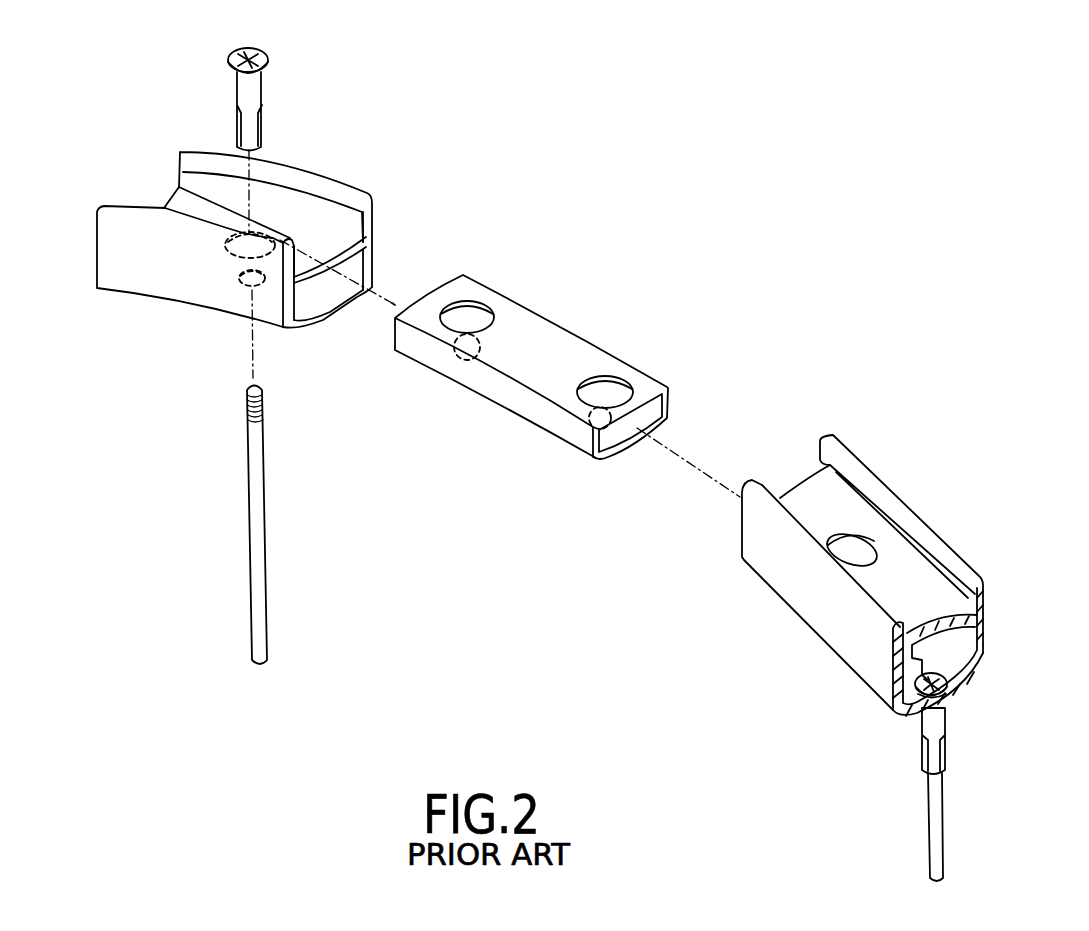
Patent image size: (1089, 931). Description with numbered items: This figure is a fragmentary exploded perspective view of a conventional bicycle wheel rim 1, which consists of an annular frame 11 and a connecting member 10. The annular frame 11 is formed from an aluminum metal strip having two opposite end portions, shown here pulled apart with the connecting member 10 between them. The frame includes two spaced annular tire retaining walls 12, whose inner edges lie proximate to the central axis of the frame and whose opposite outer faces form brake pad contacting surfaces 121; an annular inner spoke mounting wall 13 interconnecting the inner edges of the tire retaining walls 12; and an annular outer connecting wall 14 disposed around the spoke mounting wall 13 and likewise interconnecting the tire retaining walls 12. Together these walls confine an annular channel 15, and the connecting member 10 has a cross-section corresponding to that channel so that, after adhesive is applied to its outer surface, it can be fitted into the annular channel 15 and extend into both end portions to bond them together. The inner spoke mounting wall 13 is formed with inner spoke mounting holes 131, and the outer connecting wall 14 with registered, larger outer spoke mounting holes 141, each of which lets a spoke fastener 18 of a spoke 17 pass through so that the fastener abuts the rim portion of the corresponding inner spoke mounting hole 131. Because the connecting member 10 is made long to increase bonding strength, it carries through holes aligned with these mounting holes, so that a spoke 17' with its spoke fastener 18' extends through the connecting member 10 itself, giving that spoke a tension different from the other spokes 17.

The bicycle wheel rim 1 is at (680, 293).
The connecting member 10 is at (583, 337).
The annular frame 11 is at (337, 193).
The tire retaining wall 12 is at (370, 258).
The inner spoke mounting wall 13 is at (343, 303).
The outer connecting wall 14 is at (287, 225).
The annular channel 15 is at (343, 287).
The brake pad contacting surface 121 is at (165, 267).
The inner spoke mounting hole 131 is at (247, 283).
The outer spoke mounting hole 141 is at (227, 228).
The spoke 17 is at (969, 827).
The spoke 17' is at (295, 525).
The spoke fastener 18 is at (909, 723).
The spoke fastener 18' is at (279, 99).